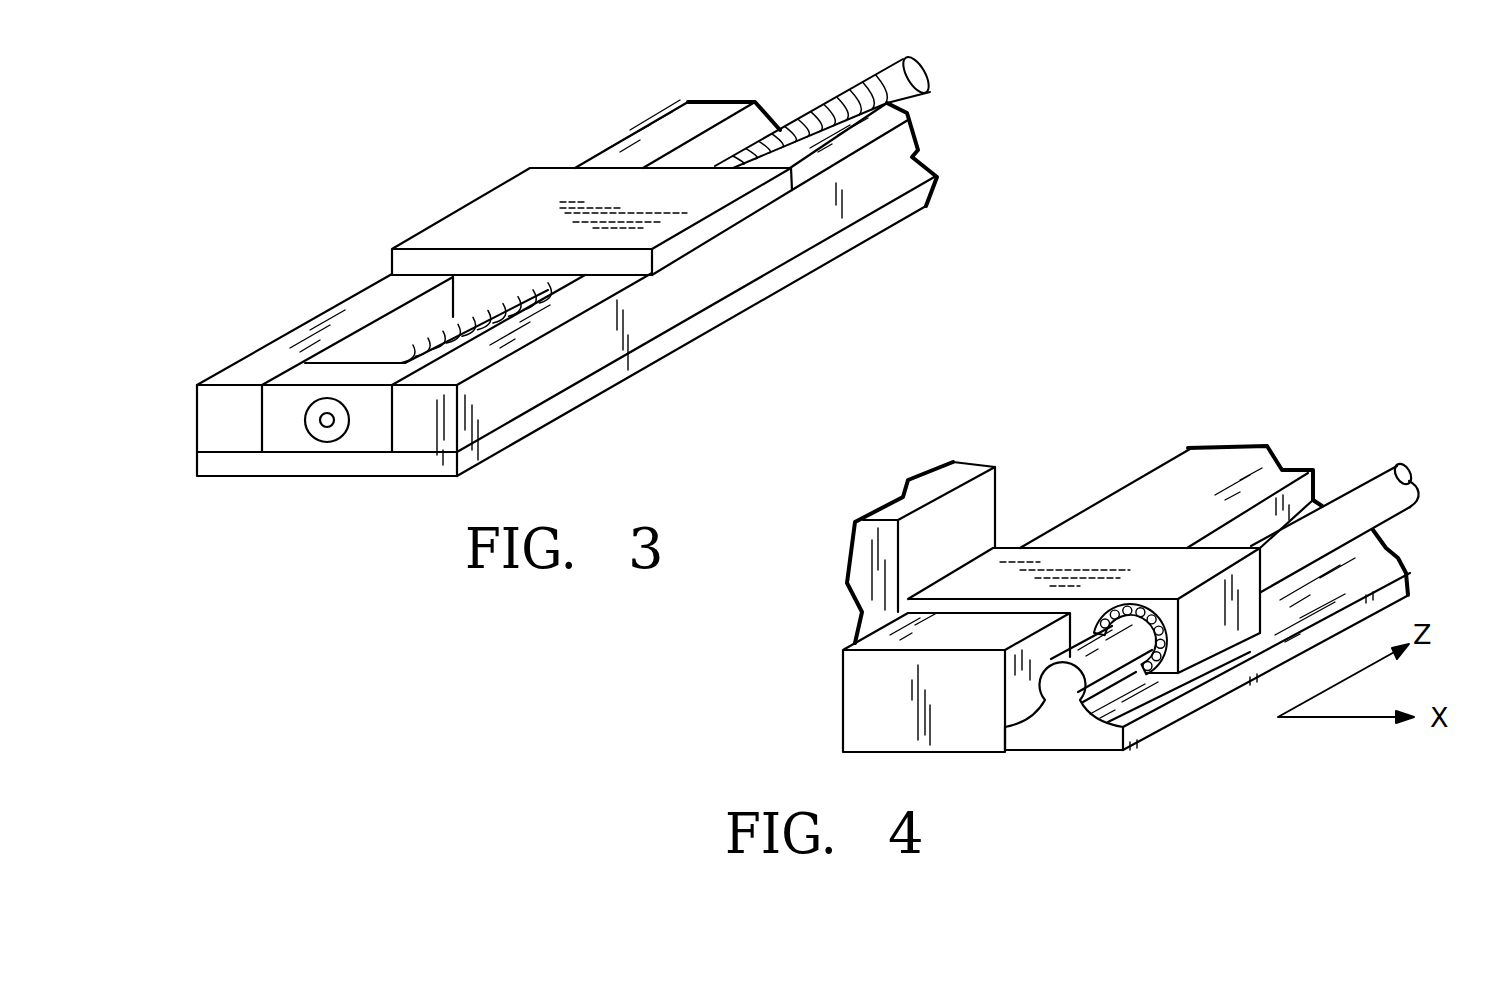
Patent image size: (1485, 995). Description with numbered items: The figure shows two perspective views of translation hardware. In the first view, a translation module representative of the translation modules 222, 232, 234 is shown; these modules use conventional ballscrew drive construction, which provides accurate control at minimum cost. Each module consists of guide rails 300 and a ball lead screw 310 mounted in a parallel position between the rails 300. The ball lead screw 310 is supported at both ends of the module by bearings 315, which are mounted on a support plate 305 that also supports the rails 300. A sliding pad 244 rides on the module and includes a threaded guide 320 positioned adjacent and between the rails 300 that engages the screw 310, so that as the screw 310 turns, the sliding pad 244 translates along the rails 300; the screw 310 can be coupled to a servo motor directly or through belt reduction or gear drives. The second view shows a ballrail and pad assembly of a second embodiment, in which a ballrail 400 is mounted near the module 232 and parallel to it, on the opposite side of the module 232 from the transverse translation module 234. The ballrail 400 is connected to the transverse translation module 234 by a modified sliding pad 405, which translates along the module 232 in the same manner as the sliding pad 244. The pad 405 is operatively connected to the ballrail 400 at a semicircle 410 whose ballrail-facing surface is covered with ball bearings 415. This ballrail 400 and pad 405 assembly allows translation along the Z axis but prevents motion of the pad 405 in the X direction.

In FIG. 3, the translation module 222 is at (336, 203).
In FIG. 3, the translation module 232 is at (539, 294).
In FIG. 4, the translation module 232 is at (872, 696).
In FIG. 3, the transverse translation module 234 is at (539, 294).
In FIG. 4, the transverse translation module 234 is at (970, 503).
In FIG. 3, the sliding pad 244 is at (568, 187).
In FIG. 3, the guide rails 300 is at (259, 365).
In FIG. 3, the support plate 305 is at (238, 470).
In FIG. 3, the ball lead screw 310 is at (417, 343).
In FIG. 3, the bearings 315 is at (368, 415).
In FIG. 3, the threaded guide 320 is at (470, 290).
In FIG. 4, the ballrail 400 is at (1070, 700).
In FIG. 4, the modified sliding pad 405 is at (1060, 548).
In FIG. 4, the semicircle 410 is at (1152, 610).
In FIG. 4, the ball bearings 415 is at (1170, 635).